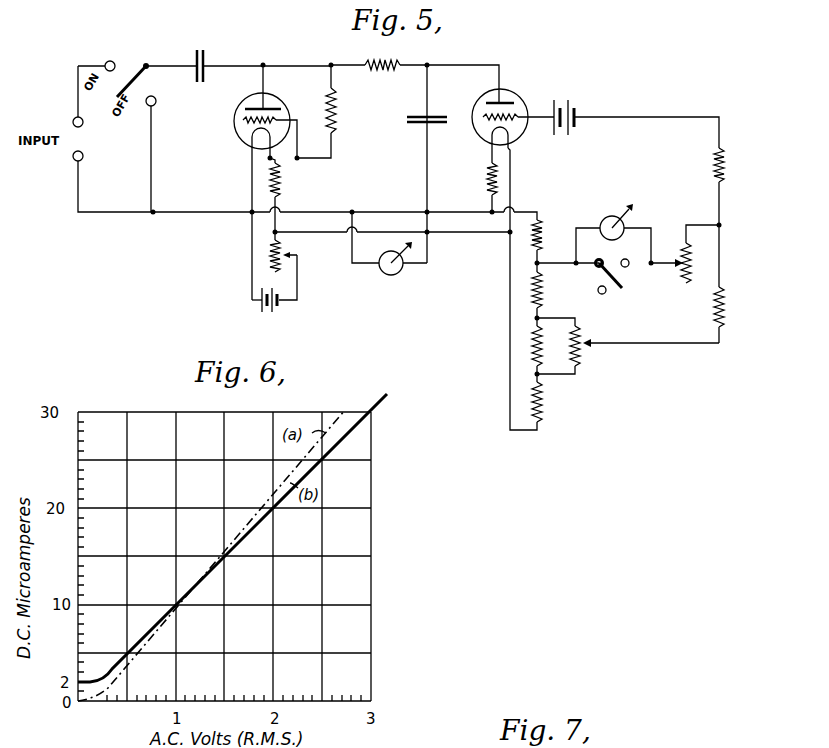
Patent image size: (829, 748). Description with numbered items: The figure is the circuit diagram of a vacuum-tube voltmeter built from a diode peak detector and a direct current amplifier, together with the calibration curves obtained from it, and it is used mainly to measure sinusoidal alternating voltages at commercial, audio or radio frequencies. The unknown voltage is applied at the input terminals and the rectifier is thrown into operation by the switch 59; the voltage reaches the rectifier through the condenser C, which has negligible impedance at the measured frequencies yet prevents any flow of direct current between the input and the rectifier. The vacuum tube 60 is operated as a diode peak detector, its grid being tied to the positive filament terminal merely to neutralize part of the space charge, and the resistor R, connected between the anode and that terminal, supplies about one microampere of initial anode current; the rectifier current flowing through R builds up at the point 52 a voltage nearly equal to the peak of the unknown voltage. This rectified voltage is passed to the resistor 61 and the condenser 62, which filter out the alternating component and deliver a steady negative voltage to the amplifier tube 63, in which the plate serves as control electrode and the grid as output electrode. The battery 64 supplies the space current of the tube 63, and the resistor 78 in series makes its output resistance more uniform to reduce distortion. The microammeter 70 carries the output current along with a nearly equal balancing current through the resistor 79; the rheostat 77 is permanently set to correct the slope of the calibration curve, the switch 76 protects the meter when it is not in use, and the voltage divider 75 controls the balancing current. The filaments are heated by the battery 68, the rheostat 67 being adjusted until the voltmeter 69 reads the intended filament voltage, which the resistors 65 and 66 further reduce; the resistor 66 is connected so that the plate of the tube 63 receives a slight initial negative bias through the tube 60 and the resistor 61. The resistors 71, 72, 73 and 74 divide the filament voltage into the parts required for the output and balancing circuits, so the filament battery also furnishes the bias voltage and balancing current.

The point 52 is at (329, 60).
The switch 59 is at (148, 63).
The condenser C is at (194, 78).
The vacuum tube 60 is at (234, 122).
The resistor R is at (338, 92).
The resistor 61 is at (399, 62).
The condenser 62 is at (412, 125).
The vacuum tube 63 is at (481, 104).
The battery 64 is at (568, 95).
The resistor 65 is at (282, 183).
The resistor 66 is at (489, 179).
The rheostat 67 is at (285, 243).
The battery 68 is at (278, 322).
The voltmeter 69 is at (387, 278).
The microammeter 70 is at (606, 214).
The resistor 71 is at (530, 240).
The resistor 72 is at (530, 288).
The resistor 73 is at (530, 343).
The resistor 74 is at (530, 396).
The voltage divider 75 is at (585, 356).
The switch 76 is at (593, 267).
The rheostat 77 is at (680, 282).
The resistor 78 is at (728, 168).
The resistor 79 is at (729, 297).